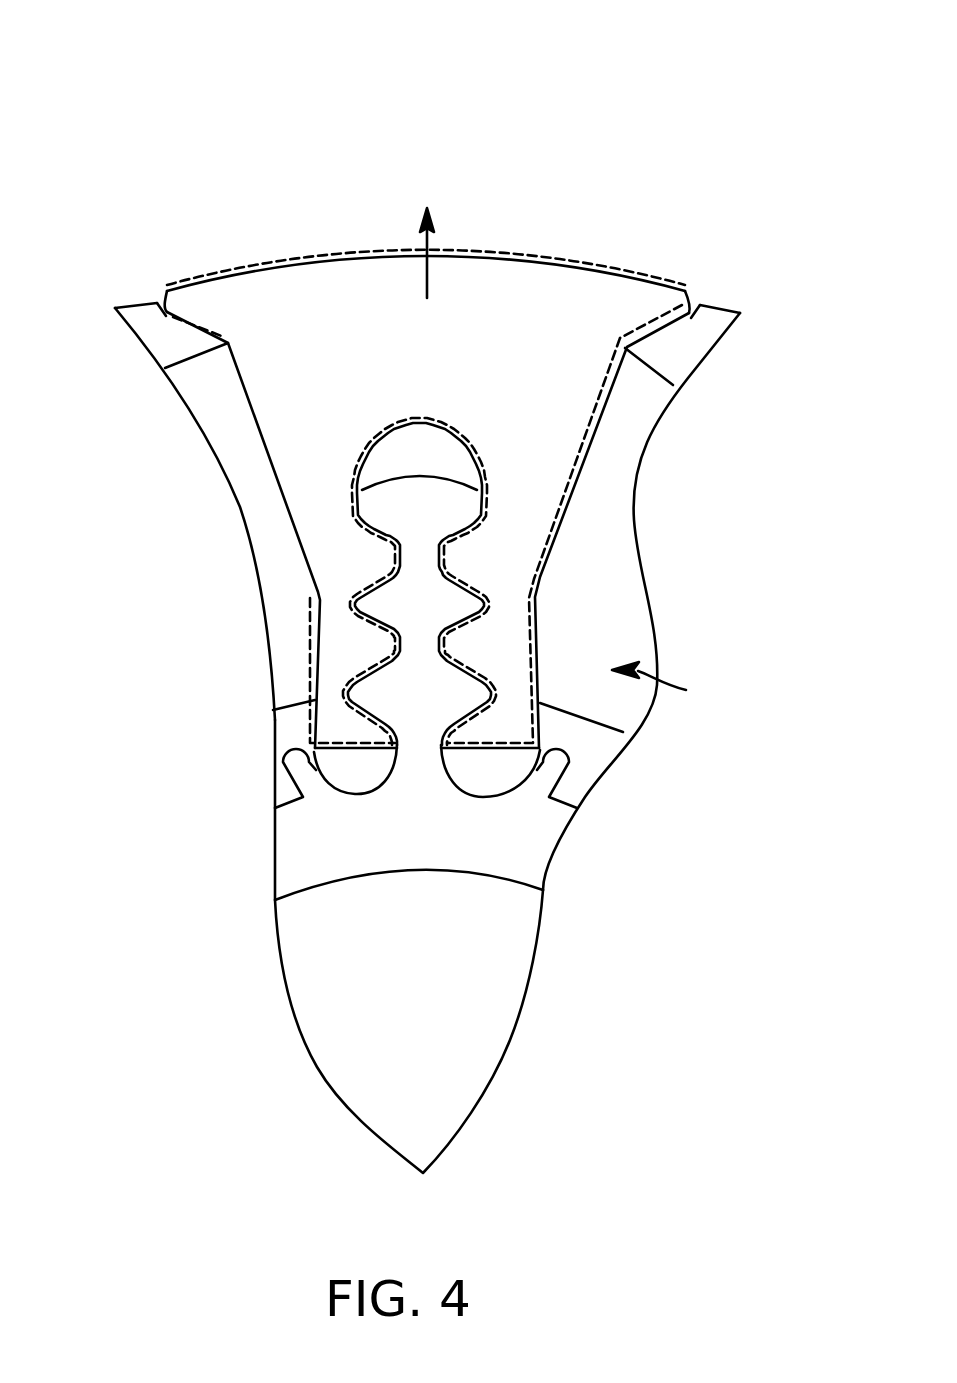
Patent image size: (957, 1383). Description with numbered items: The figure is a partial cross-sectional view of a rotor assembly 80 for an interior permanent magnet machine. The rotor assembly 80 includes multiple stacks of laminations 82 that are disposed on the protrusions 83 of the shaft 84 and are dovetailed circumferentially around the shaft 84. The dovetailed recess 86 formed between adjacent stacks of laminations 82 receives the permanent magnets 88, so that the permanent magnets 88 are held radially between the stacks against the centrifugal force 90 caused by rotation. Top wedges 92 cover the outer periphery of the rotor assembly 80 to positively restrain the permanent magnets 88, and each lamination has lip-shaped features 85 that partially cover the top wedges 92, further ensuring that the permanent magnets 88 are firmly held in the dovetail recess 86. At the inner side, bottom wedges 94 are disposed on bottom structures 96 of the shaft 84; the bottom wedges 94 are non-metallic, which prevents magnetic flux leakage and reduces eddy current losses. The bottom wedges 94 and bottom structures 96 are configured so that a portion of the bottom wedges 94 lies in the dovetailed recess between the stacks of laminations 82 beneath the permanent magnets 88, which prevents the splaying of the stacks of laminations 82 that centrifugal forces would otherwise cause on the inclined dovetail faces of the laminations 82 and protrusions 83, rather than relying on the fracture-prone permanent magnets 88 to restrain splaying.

The rotor assembly 80 is at (738, 72).
The stacks of laminations 82 is at (520, 510).
The protrusions 83 is at (457, 610).
The shaft 84 is at (537, 863).
The lip-shaped features 85 is at (167, 297).
The dovetailed recess 86 is at (666, 683).
The permanent magnets 88 is at (263, 505).
The centrifugal force 90 is at (430, 243).
The top wedges 92 is at (695, 343).
The bottom wedges 94 is at (286, 728).
The bottom structures 96 is at (563, 790).